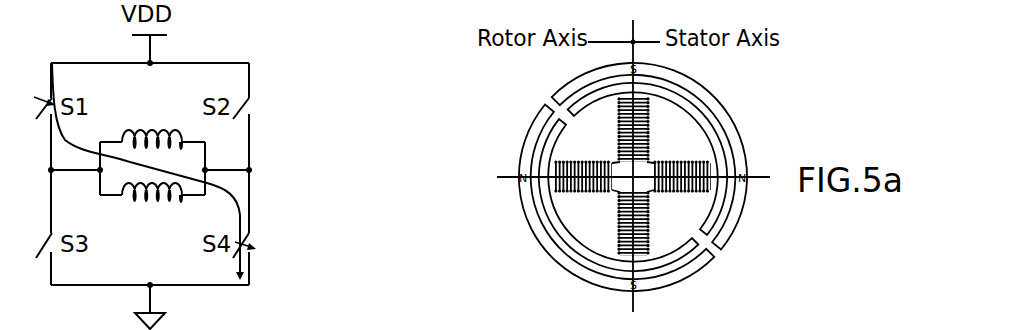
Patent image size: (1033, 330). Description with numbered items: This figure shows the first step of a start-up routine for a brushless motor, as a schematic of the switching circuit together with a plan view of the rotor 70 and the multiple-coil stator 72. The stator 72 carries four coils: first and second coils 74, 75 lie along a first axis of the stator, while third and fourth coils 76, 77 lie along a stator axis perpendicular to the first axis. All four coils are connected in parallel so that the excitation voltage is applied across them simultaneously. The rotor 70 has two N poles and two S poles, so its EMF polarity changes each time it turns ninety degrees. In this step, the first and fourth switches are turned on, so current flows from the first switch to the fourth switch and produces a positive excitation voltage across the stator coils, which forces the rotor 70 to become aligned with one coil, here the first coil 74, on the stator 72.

The rotor 70 is at (737, 212).
The multiple-coil stator 72 is at (583, 102).
The first coil 74 is at (647, 122).
The second coil 75 is at (677, 190).
The third coil 76 is at (593, 190).
The fourth coil 77 is at (648, 231).